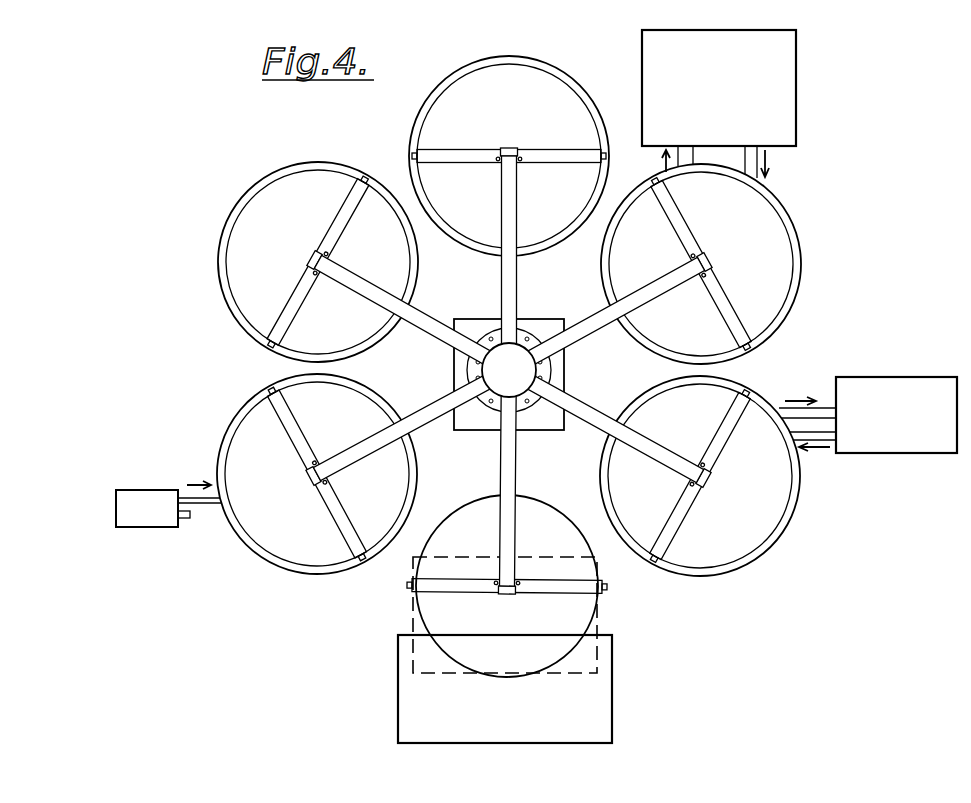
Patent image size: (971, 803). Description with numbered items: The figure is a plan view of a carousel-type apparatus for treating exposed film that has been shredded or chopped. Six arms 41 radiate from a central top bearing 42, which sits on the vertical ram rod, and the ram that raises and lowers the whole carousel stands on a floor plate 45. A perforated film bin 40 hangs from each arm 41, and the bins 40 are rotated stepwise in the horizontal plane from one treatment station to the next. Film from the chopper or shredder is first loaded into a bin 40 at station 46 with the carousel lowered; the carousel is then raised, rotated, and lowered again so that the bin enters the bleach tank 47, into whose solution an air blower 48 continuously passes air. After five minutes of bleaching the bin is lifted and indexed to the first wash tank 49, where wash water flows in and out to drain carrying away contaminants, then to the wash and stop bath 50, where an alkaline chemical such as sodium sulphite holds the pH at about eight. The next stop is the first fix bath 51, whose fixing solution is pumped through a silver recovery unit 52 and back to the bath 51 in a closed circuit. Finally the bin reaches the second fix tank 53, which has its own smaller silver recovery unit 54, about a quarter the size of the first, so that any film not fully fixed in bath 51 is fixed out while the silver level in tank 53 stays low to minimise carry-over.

The perforated film bins 40 is at (517, 349).
The arms 41 is at (575, 410).
The top bearing 42 is at (515, 358).
The floor plate 45 is at (455, 370).
The station 46 is at (404, 692).
The bleach tank 47 is at (243, 535).
The air blower 48 is at (148, 497).
The first wash tank 49 is at (222, 245).
The wash and stop bath 50 is at (556, 70).
The first fix bath 51 is at (788, 220).
The silver recovery unit 52 is at (787, 90).
The second fix tank 53 is at (795, 503).
The silver recovery unit 54 is at (905, 385).